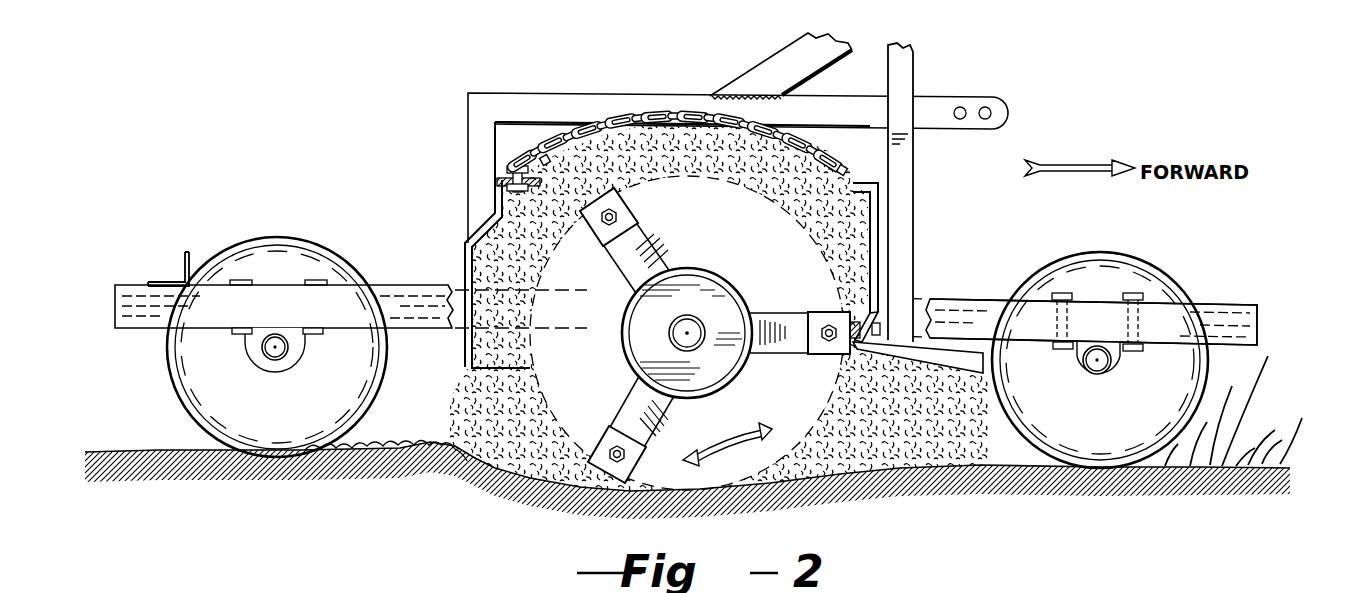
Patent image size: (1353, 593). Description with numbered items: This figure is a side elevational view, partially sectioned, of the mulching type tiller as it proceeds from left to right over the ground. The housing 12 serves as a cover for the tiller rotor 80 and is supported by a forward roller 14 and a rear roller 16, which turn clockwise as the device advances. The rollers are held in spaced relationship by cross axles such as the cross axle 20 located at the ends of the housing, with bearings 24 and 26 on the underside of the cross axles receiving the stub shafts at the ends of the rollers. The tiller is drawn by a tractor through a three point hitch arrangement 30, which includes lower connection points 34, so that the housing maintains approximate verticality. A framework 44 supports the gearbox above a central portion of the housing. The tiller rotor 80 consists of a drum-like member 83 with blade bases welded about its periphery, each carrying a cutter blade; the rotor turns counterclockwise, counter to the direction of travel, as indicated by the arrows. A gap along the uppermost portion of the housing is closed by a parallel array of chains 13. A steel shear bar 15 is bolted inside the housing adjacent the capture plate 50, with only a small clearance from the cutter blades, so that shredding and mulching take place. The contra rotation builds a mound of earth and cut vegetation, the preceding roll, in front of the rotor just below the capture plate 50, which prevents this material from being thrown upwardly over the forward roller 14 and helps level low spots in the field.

The housing 12 is at (490, 215).
The chains 13 is at (665, 117).
The forward roller 14 is at (1106, 443).
The shear bar 15 is at (862, 293).
The rear roller 16 is at (217, 385).
The cross axle 20 is at (1193, 317).
The bearing 24 is at (1113, 370).
The bearing 26 is at (290, 363).
The three point hitch arrangement 30 is at (900, 83).
The lower connection points 34 is at (997, 115).
The framework 44 is at (636, 112).
The capture plate 50 is at (957, 345).
The tiller rotor 80 is at (750, 278).
The drum-like member 83 is at (717, 393).